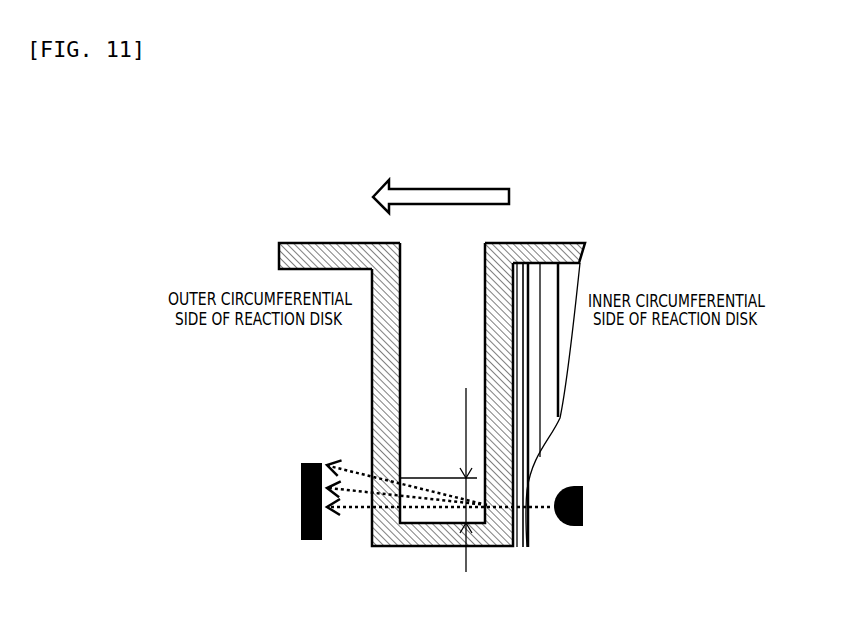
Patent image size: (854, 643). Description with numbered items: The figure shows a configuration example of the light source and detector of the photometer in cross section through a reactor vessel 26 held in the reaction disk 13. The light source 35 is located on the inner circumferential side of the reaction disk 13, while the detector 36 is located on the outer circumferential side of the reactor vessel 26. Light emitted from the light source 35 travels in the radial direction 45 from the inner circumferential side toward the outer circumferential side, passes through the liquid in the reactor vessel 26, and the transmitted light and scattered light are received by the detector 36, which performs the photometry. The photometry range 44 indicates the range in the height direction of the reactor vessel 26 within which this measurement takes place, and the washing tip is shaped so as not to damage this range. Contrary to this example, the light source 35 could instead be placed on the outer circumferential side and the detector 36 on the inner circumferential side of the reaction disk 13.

The reaction disk 13 is at (280, 243).
The reactor vessel 26 is at (441, 546).
The light source 35 is at (583, 505).
The detector 36 is at (301, 467).
The photometry range 44 is at (465, 435).
The radial direction 45 is at (463, 188).